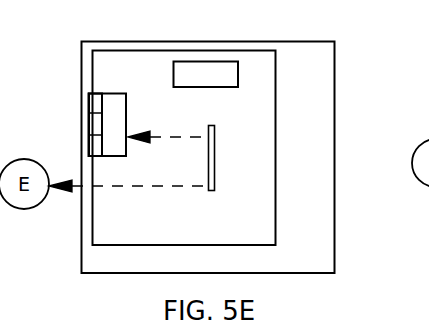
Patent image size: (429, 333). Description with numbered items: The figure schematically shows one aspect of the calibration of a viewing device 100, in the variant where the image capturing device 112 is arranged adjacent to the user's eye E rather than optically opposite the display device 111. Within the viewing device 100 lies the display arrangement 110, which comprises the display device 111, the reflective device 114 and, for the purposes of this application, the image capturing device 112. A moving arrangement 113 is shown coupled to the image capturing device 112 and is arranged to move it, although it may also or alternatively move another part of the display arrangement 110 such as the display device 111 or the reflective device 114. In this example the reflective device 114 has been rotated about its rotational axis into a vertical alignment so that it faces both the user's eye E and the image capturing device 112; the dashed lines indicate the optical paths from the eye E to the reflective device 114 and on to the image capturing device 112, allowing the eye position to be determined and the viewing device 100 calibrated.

The viewing device 100 is at (338, 72).
The display arrangement 110 is at (265, 61).
The display device 111 is at (206, 75).
The image capturing device 112 is at (148, 125).
The moving arrangement 113 is at (98, 125).
The reflective device 114 is at (215, 159).